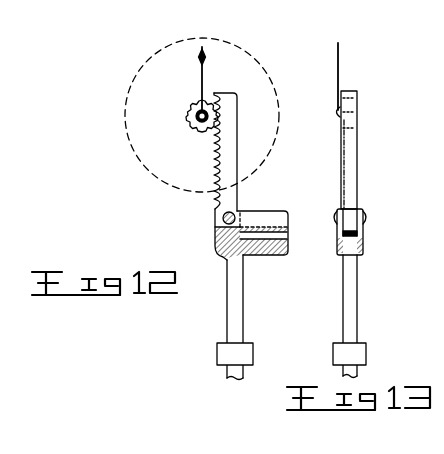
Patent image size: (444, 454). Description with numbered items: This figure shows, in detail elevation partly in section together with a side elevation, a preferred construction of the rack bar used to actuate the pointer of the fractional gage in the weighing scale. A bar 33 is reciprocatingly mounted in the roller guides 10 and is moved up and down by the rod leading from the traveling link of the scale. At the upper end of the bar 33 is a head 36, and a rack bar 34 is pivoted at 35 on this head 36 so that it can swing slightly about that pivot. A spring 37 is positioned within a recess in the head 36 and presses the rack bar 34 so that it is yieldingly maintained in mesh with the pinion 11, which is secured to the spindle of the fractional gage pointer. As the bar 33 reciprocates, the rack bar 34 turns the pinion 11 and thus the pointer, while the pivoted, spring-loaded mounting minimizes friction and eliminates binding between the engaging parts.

In FIG. 12, the roller guides 10 is at (217, 354).
In FIG. 13, the roller guides 10 is at (356, 351).
In FIG. 12, the pinion 11 is at (186, 120).
In FIG. 12, the bar 33 is at (226, 297).
In FIG. 13, the bar 33 is at (356, 301).
In FIG. 12, the rack bar 34 is at (216, 194).
In FIG. 13, the rack bar 34 is at (356, 173).
In FIG. 12, the pivot 35 is at (223, 220).
In FIG. 13, the pivot 35 is at (364, 218).
In FIG. 12, the head 36 is at (217, 252).
In FIG. 13, the head 36 is at (361, 249).
In FIG. 12, the spring 37 is at (268, 248).